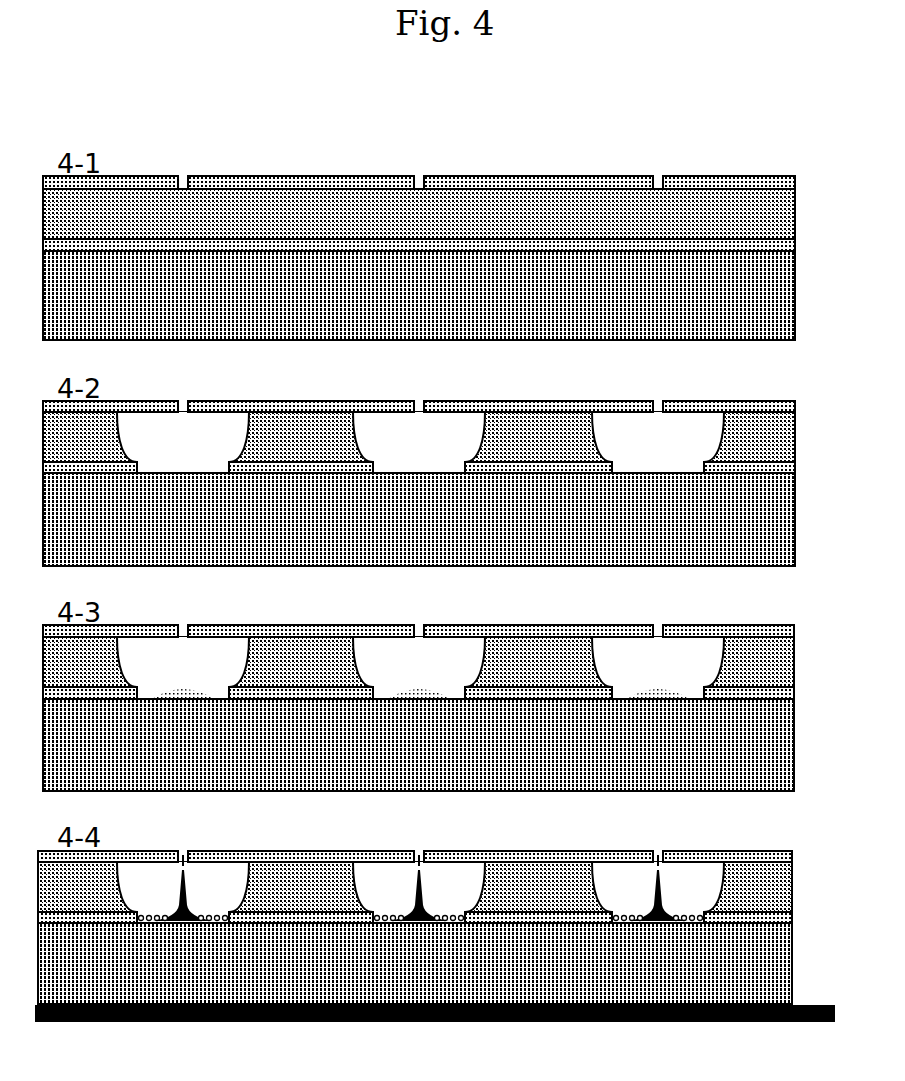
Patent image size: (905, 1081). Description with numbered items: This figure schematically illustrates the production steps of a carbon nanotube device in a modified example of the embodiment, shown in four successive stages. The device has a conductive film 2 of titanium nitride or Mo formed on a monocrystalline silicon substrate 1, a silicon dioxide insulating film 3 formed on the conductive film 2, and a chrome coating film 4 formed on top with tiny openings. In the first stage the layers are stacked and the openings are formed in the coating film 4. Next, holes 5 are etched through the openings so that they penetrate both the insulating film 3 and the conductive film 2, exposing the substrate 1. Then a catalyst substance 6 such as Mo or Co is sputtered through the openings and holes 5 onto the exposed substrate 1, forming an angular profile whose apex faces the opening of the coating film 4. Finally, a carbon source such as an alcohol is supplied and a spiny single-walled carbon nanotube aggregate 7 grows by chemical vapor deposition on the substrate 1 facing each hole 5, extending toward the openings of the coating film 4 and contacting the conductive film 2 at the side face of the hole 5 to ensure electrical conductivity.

The substrate 1 is at (436, 627).
The conductive film 2 is at (436, 581).
The insulating film 3 is at (436, 550).
The coating film 4 is at (436, 521).
The holes 5 is at (420, 667).
The catalyst substance 6 is at (420, 677).
The spiny single-walled carbon nanotube aggregate 7 is at (421, 872).